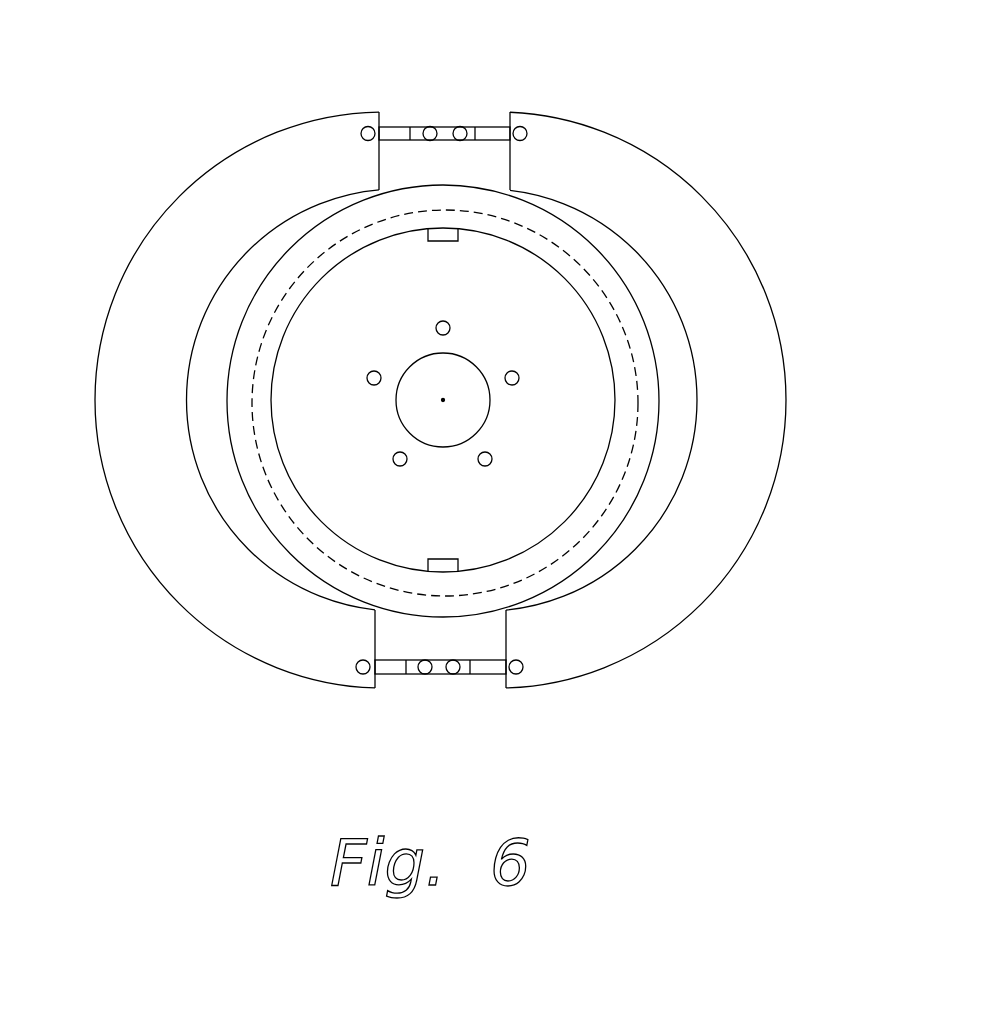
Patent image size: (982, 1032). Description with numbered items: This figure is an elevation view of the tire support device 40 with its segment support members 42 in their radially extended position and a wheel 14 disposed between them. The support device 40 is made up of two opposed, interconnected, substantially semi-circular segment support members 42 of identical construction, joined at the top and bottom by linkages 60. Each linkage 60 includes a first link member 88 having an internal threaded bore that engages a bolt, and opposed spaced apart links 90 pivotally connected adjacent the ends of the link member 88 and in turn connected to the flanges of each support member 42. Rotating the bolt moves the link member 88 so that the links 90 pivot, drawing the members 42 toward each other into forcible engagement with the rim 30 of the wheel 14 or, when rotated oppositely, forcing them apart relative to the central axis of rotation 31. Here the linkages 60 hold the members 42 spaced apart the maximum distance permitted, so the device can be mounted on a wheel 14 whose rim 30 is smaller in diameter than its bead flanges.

The wheel 14 is at (263, 268).
The rim 30 is at (600, 268).
The central axis of rotation 31 is at (443, 400).
The tire support device 40 is at (780, 338).
The segment support members 42 is at (140, 422).
The linkage 60 is at (455, 100).
The first link member 88 is at (446, 125).
The links 90 is at (397, 125).